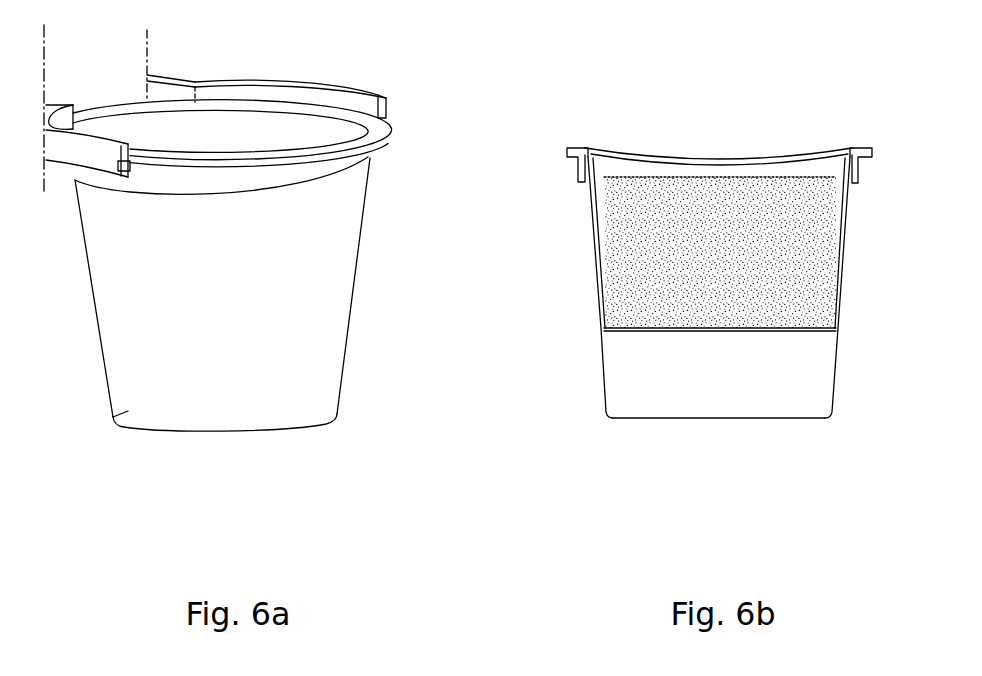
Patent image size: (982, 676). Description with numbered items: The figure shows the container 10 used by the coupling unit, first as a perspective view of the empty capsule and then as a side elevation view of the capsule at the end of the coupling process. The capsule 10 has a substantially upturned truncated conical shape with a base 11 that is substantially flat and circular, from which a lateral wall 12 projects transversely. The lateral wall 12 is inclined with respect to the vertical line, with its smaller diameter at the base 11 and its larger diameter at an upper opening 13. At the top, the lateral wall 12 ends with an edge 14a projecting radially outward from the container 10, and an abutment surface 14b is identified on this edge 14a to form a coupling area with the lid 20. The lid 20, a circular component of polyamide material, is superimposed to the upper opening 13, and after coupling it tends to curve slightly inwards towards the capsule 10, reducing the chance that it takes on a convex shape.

In FIG. 6A, the container 10 is at (200, 292).
In FIG. 6B, the container 10 is at (651, 323).
In FIG. 6A, the base 11 is at (113, 417).
In FIG. 6B, the base 11 is at (650, 417).
In FIG. 6A, the lateral wall 12 is at (160, 310).
In FIG. 6B, the lateral wall 12 is at (602, 297).
In FIG. 6A, the upper opening 13 is at (313, 120).
In FIG. 6A, the edge 14a is at (383, 148).
In FIG. 6B, the edge 14a is at (857, 162).
In FIG. 6A, the abutment surface 14b is at (387, 136).
In FIG. 6B, the lid 20 is at (768, 157).